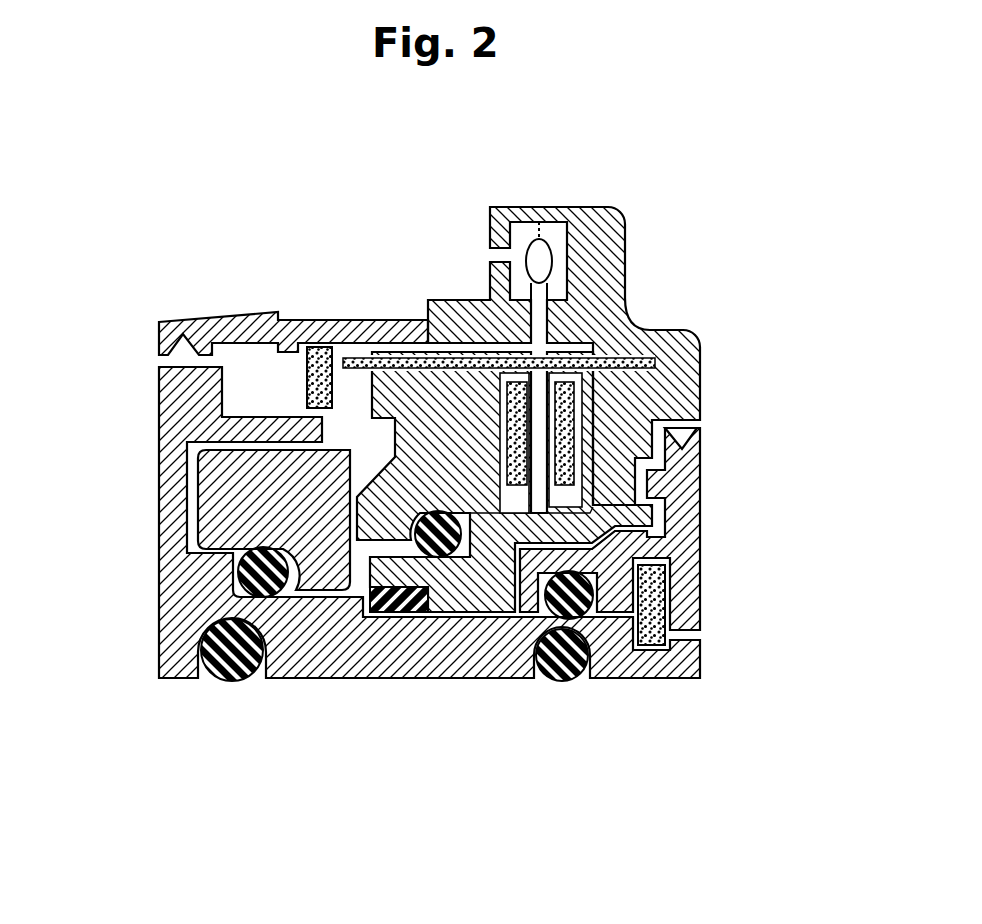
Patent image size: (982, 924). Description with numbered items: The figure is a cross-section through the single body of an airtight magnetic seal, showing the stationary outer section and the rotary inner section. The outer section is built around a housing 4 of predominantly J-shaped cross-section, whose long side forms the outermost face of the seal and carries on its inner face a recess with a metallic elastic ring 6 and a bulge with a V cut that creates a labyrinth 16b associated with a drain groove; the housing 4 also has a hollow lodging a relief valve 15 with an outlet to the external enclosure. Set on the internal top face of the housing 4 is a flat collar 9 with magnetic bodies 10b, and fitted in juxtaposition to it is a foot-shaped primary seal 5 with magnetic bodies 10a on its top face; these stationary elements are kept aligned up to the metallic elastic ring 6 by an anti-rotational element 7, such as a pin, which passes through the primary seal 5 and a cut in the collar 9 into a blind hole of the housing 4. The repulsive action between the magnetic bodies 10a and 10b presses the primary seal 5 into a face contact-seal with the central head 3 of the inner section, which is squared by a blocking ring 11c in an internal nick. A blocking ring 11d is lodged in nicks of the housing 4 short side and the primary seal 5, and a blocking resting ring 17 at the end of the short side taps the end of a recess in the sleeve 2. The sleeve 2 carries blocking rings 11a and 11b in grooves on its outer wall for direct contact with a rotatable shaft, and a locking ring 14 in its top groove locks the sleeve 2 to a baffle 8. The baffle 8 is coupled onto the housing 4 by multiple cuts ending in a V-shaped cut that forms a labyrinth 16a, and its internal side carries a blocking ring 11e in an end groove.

The sleeve 2 is at (388, 662).
The central head 3 is at (313, 558).
The housing 4 is at (635, 395).
The primary seal 5 is at (457, 388).
The metallic elastic ring 6 is at (313, 363).
The anti-rotational element 7 is at (655, 362).
The baffle 8 is at (680, 522).
The collar 9 is at (673, 560).
The magnetic bodies 10a is at (517, 395).
The magnetic bodies 10b is at (562, 398).
The blocking ring 11a is at (237, 667).
The blocking ring 11b is at (565, 660).
The blocking ring 11c is at (240, 582).
The blocking ring 11d is at (445, 548).
The blocking ring 11e is at (583, 617).
The locking ring 14 is at (653, 633).
The relief valve 15 is at (538, 262).
The labyrinth 16a is at (677, 432).
The labyrinth 16b is at (190, 360).
The blocking resting ring 17 is at (418, 612).